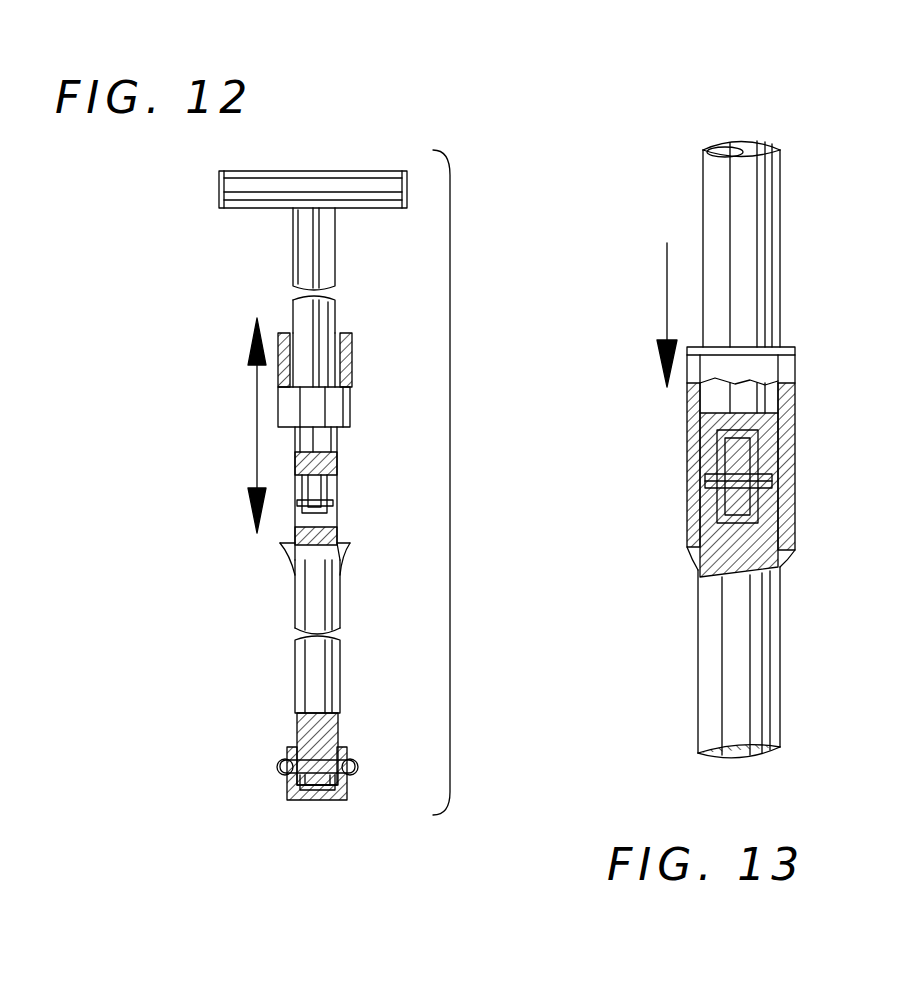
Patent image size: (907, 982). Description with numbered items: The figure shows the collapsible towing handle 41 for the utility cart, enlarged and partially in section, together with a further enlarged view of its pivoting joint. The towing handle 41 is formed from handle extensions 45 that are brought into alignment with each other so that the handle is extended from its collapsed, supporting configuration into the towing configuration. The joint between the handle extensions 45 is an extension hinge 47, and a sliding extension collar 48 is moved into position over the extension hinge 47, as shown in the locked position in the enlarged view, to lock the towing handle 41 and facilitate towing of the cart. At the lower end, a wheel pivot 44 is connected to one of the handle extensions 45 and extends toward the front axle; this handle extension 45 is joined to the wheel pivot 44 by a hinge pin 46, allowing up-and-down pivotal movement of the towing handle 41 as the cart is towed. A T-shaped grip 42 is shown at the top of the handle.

In FIG. 12, the towing handle 41 is at (286, 179).
In FIG. 12, the handle 42 is at (248, 208).
In FIG. 12, the wheel pivot 44 is at (302, 803).
In FIG. 12, the handle extensions 45 is at (293, 255).
In FIG. 13, the handle extensions 45 is at (765, 285).
In FIG. 12, the hinge pin 46 is at (336, 503).
In FIG. 13, the hinge pin 46 is at (704, 486).
In FIG. 12, the extension hinge 47 is at (330, 485).
In FIG. 13, the extension hinge 47 is at (708, 452).
In FIG. 12, the extension collar 48 is at (340, 412).
In FIG. 13, the extension collar 48 is at (783, 377).